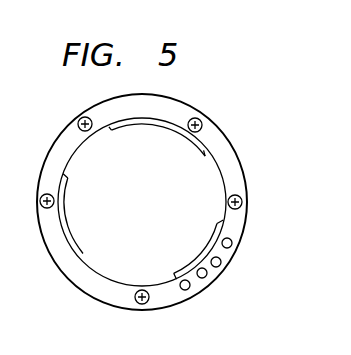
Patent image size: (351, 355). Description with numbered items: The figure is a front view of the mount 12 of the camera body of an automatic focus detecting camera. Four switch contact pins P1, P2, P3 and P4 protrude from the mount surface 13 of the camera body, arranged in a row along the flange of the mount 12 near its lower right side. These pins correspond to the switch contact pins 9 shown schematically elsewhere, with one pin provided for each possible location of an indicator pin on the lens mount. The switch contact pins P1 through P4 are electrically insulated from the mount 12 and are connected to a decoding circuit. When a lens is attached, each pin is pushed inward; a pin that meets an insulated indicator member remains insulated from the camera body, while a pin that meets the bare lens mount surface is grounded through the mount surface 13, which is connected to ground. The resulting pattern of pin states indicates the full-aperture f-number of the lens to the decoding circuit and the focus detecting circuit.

The mount of the camera body 12 is at (236, 136).
The mount surface of the camera body 13 is at (233, 168).
The switch contact pins 9 is at (252, 278).
The switch contact pin P1 is at (190, 290).
The switch contact pin P2 is at (207, 278).
The switch contact pin P3 is at (221, 266).
The switch contact pin P4 is at (233, 244).